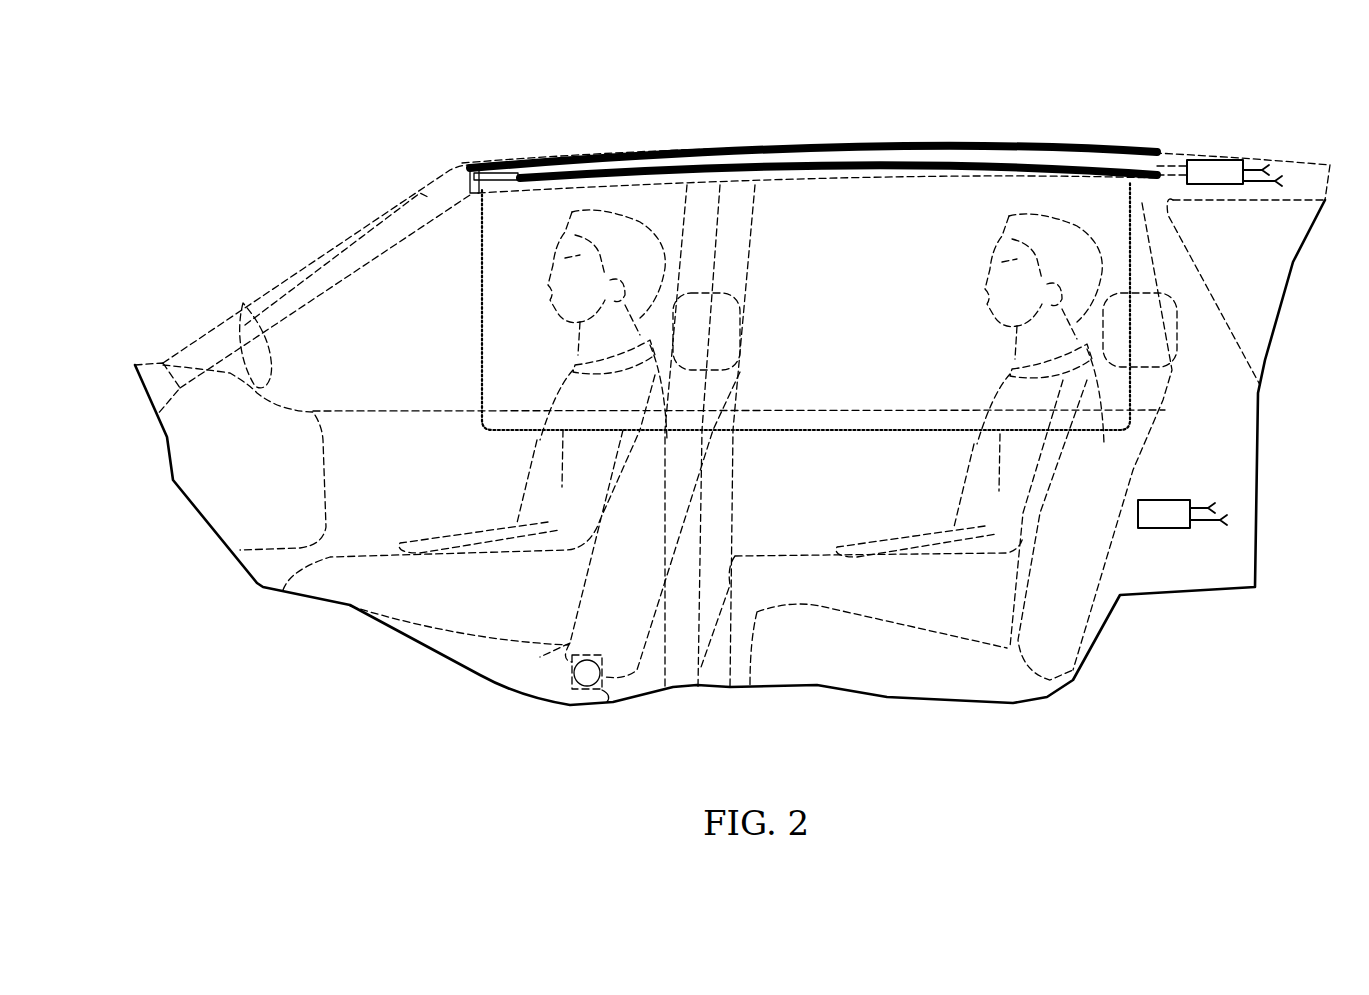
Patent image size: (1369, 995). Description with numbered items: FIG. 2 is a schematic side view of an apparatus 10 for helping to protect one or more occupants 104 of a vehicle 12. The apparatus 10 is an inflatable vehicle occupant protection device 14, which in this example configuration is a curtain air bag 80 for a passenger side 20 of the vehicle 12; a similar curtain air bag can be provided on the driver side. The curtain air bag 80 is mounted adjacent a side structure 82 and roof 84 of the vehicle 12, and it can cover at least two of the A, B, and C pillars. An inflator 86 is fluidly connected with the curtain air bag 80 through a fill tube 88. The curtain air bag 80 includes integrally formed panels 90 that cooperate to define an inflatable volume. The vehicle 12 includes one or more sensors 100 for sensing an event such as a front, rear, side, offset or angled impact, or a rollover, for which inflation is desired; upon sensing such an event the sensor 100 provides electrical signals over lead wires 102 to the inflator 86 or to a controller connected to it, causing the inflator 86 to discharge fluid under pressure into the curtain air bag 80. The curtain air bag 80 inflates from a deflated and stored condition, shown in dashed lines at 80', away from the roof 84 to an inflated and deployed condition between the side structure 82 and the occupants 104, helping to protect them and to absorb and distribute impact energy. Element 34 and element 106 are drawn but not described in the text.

The apparatus 10 is at (442, 163).
The vehicle 12 is at (360, 217).
The inflatable vehicle occupant protection device 14 is at (797, 383).
The passenger side 20 is at (846, 252).
The side mirror / pillar trim 34 is at (243, 303).
The curtain air bag 80 is at (838, 324).
The curtain air bag in deflated and stored condition 80' is at (813, 146).
The side structure 82 is at (1217, 358).
The roof 84 is at (985, 143).
The inflator 86 is at (1206, 160).
The fill tube 88 is at (1170, 165).
The panels 90 is at (480, 372).
The sensor 100 is at (1162, 507).
The lead wires 102 is at (1252, 165).
The occupant 104 is at (548, 318).
The sensor 106 is at (613, 620).